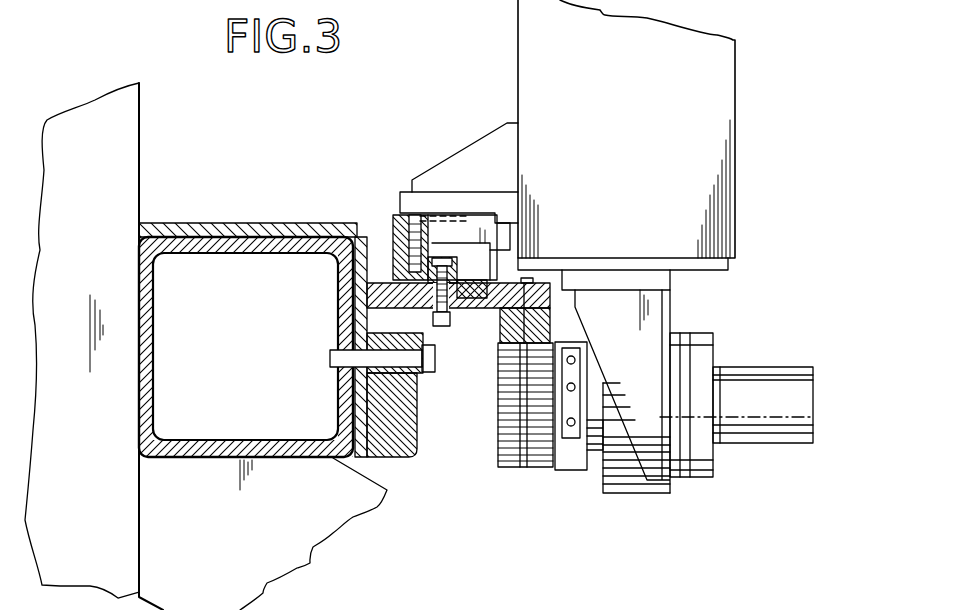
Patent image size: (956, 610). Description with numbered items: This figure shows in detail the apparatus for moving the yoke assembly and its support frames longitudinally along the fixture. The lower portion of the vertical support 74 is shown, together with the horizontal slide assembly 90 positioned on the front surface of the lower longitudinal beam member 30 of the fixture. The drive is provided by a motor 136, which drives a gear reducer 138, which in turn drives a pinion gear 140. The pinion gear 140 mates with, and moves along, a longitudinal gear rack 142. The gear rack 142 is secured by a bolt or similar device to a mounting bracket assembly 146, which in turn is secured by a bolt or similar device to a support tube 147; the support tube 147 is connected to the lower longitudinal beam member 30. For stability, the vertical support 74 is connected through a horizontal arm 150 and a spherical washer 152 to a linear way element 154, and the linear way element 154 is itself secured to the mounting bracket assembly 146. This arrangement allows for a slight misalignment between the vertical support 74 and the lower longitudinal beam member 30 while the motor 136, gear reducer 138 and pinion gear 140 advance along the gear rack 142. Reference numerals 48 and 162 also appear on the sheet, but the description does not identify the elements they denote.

The lower longitudinal beam member 30 is at (127, 155).
The horizontal slide assembly 90 is at (338, 208).
The support tube 147 is at (315, 440).
The longitudinal gear rack 142 is at (497, 325).
The mounting bracket assembly 146 is at (450, 348).
The horizontal arm 150 is at (404, 197).
The spherical washer 152 is at (438, 210).
The linear way element 154 is at (478, 222).
The vertical support 74 is at (722, 205).
The gear reducer 138 is at (661, 506).
The pinion gear 140 is at (533, 479).
The motor 136 is at (765, 438).
The member 48 is at (452, 609).
The member 162 is at (554, 600).